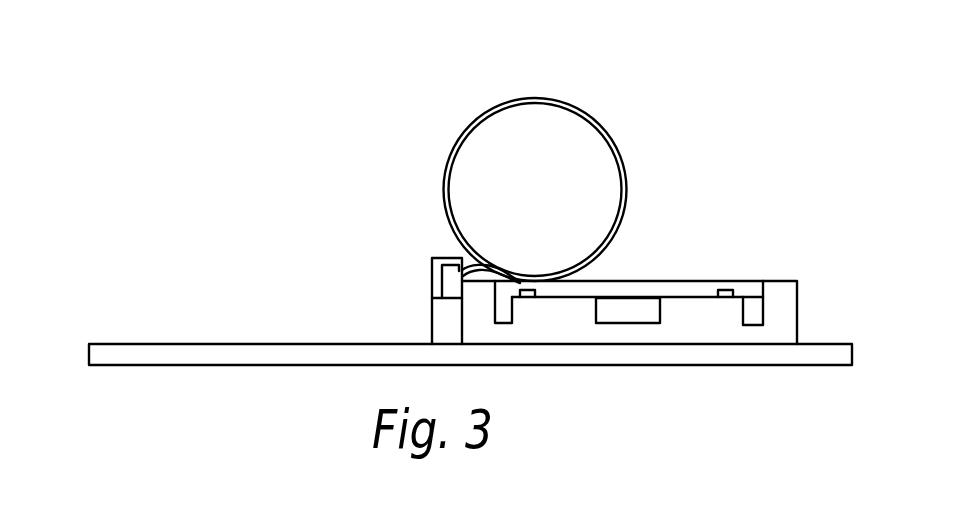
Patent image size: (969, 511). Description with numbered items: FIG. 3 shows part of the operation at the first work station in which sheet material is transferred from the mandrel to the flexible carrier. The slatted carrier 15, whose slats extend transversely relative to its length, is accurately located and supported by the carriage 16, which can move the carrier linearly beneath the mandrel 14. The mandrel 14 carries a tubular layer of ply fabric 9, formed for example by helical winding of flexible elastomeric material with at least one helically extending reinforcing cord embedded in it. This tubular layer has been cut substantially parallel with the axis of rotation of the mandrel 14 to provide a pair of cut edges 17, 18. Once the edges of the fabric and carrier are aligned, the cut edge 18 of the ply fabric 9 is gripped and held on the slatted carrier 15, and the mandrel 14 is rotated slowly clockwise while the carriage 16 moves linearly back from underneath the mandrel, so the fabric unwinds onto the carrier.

The ply fabric 9 is at (483, 112).
The mandrel 14 is at (573, 170).
The slatted carrier 15 is at (687, 288).
The carriage 16 is at (703, 332).
The cut edge 17 is at (468, 263).
The cut edge 18 is at (476, 282).